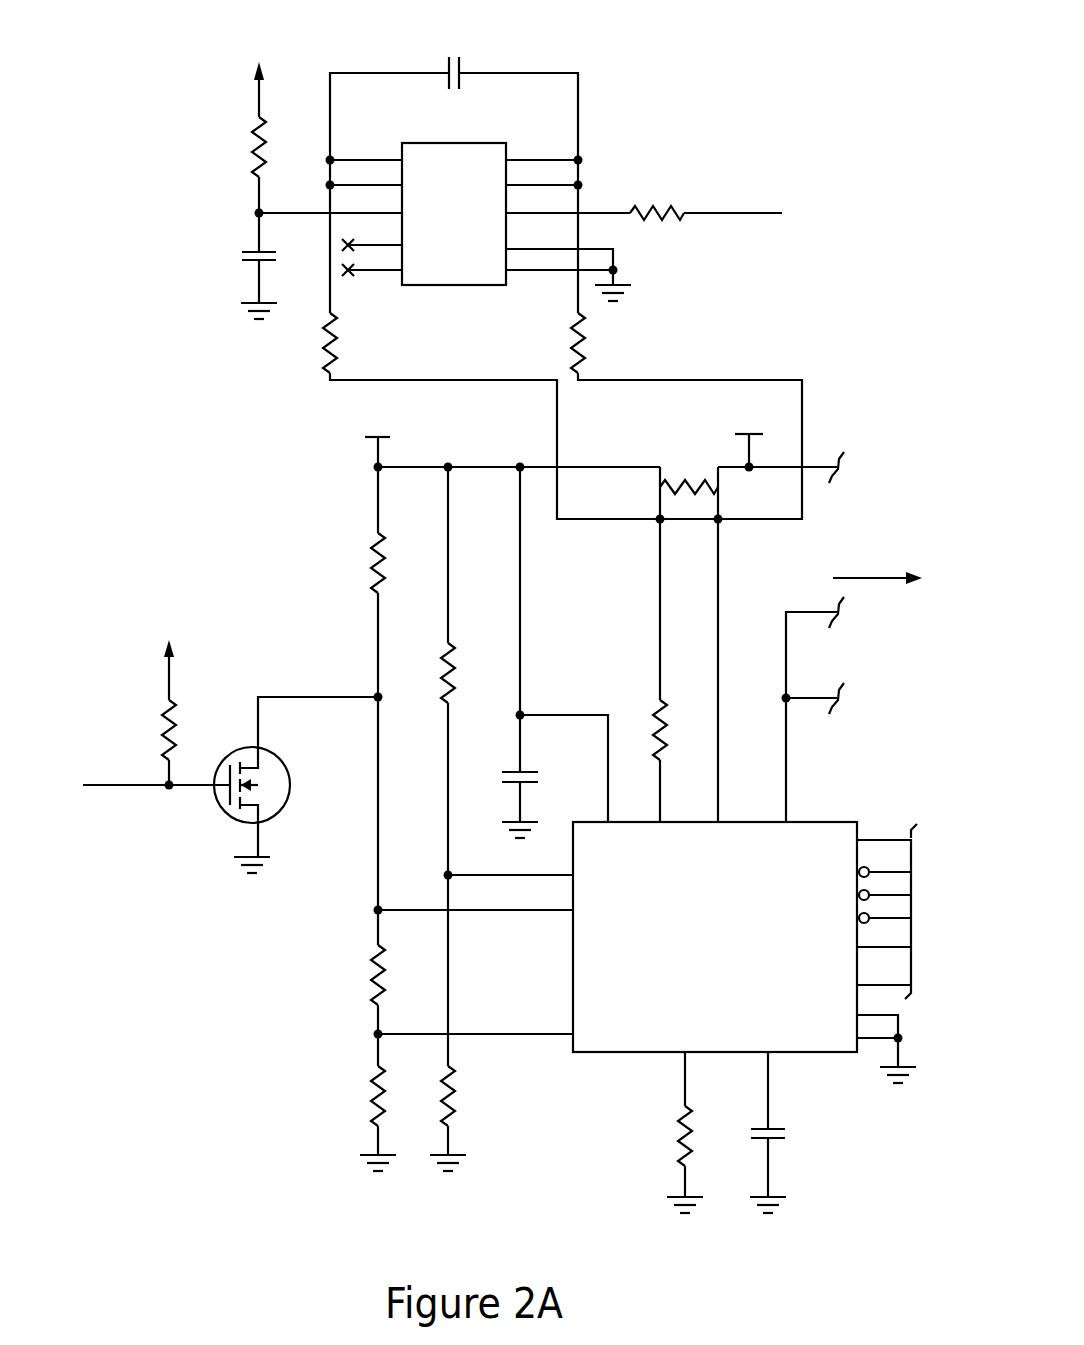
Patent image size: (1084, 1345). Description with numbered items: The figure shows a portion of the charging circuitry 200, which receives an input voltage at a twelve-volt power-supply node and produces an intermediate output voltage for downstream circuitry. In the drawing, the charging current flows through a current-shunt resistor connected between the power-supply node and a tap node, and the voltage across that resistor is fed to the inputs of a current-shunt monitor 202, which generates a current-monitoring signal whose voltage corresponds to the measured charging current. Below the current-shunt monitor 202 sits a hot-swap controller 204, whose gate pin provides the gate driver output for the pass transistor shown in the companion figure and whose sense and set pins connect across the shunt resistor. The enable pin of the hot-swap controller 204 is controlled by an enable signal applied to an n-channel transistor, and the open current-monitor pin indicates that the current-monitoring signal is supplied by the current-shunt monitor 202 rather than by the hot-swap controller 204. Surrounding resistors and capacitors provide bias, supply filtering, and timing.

The charging circuitry 200 is at (502, 623).
The current-shunt monitor 202 is at (490, 143).
The hot-swap controller 204 is at (715, 937).